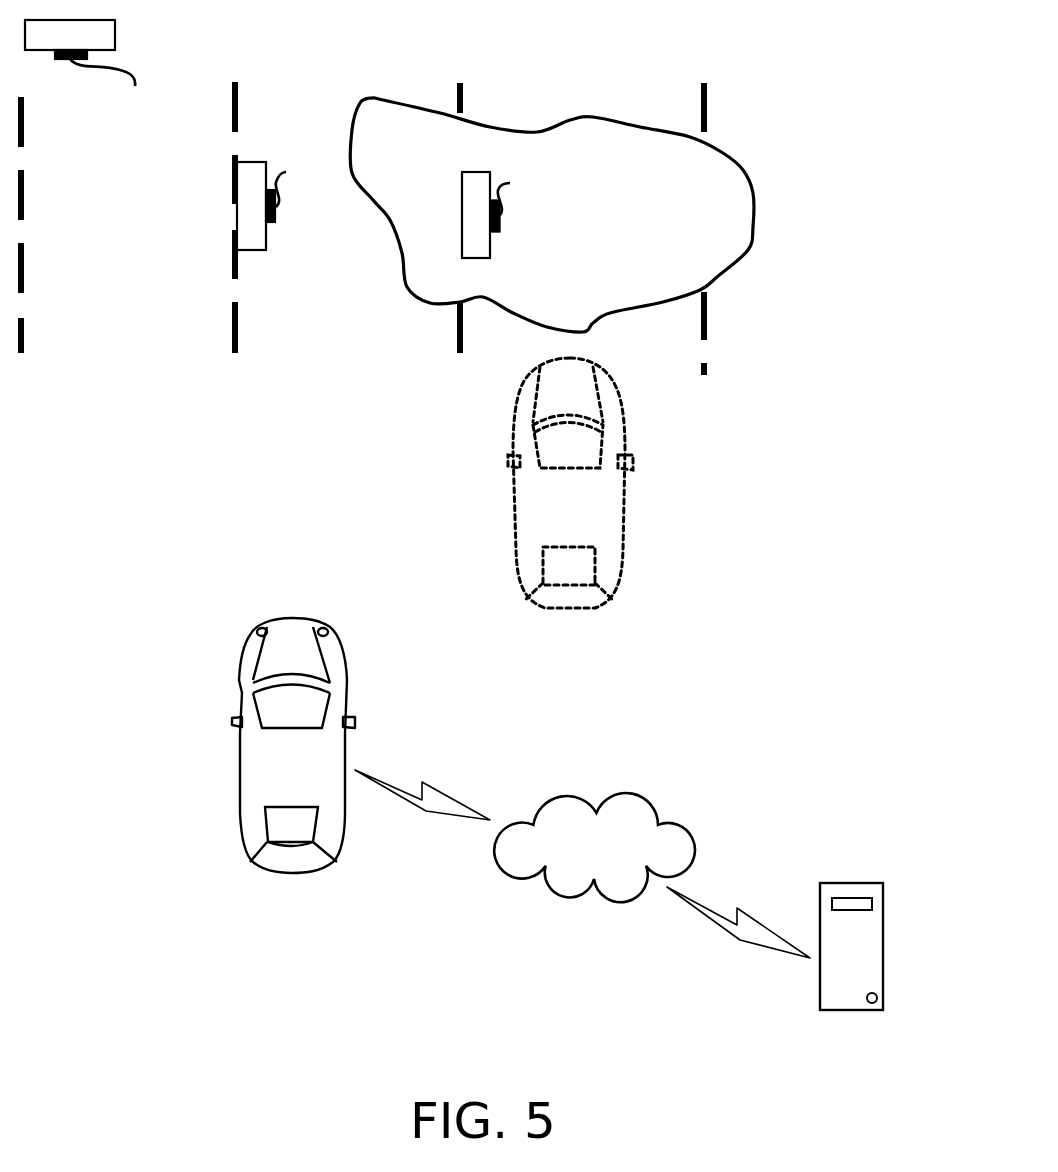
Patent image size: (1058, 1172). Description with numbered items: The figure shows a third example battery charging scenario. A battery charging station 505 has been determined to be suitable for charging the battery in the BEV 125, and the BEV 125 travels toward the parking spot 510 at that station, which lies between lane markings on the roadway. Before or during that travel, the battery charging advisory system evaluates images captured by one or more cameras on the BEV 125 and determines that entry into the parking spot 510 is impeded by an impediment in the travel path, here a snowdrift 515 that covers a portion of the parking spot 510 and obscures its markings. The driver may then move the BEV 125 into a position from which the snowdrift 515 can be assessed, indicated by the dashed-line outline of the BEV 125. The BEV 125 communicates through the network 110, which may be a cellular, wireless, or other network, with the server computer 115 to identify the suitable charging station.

The battery charging station 505 is at (465, 258).
The parking spot 510 is at (507, 67).
The snowdrift 515 is at (770, 163).
The BEV 125 is at (655, 535).
The network 110 is at (643, 833).
The server computer 115 is at (883, 948).